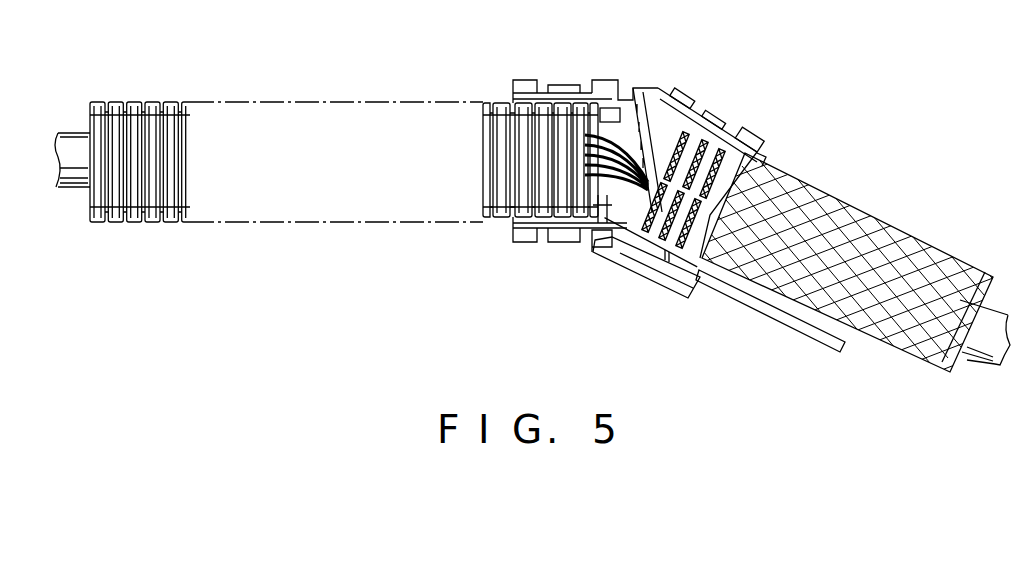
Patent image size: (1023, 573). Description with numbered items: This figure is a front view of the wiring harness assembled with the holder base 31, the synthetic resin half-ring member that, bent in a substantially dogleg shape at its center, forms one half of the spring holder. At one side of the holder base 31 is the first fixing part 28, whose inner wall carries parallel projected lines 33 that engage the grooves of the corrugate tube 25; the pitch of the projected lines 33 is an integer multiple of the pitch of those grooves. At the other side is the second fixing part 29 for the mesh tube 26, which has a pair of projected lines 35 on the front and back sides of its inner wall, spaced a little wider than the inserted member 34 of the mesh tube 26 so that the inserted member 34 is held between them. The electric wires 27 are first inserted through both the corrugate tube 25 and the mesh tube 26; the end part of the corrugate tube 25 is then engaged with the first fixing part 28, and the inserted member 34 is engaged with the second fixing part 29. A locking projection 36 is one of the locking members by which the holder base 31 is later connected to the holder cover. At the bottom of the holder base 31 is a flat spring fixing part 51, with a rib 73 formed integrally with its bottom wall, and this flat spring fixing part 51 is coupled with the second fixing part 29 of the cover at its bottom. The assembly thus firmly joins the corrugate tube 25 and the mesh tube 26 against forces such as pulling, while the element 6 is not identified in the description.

The corrugate tube 25 is at (150, 103).
The projected lines 33 is at (513, 103).
The first fixing part 28 is at (542, 92).
The locking projection 36 is at (552, 243).
The holder base 31 is at (636, 80).
The electric wires 27 is at (655, 85).
The inserted member 34 is at (692, 105).
The second fixing part 29 is at (745, 130).
The projected lines 35 is at (762, 156).
The flat spring fixing part 51 is at (624, 245).
The rib 73 is at (644, 278).
The mesh tube 26 is at (913, 236).
The cable 6 is at (774, 310).